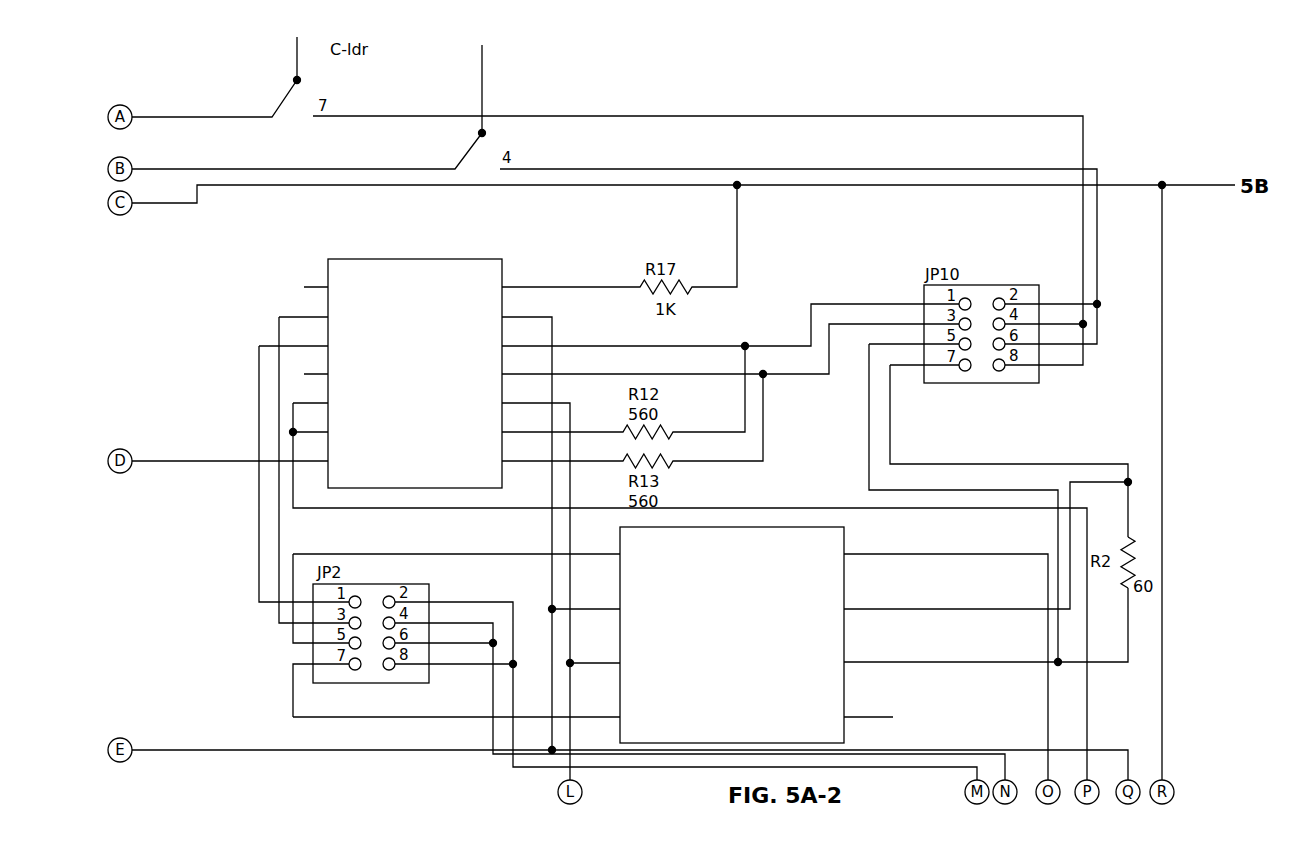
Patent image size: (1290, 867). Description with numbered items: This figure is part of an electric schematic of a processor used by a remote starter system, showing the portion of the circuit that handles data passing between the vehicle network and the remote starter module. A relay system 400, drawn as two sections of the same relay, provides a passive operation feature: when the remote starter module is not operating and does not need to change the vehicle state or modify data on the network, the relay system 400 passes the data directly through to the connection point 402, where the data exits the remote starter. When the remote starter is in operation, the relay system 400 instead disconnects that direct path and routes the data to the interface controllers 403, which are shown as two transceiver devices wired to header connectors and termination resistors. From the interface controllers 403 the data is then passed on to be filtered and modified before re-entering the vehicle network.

The relay system 400 is at (240, 82).
The connection point 402 is at (393, 53).
The interface controllers 403 is at (433, 259).